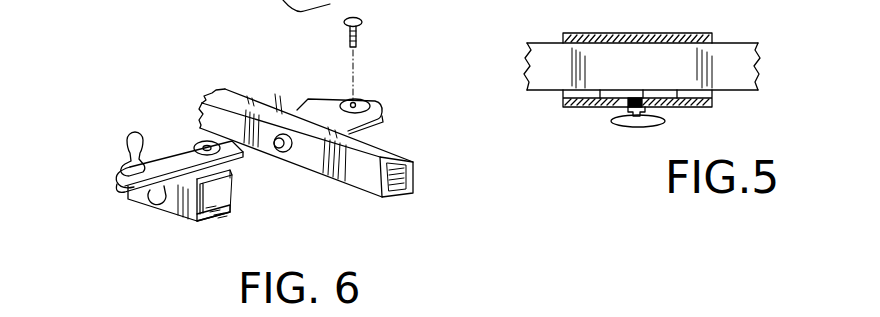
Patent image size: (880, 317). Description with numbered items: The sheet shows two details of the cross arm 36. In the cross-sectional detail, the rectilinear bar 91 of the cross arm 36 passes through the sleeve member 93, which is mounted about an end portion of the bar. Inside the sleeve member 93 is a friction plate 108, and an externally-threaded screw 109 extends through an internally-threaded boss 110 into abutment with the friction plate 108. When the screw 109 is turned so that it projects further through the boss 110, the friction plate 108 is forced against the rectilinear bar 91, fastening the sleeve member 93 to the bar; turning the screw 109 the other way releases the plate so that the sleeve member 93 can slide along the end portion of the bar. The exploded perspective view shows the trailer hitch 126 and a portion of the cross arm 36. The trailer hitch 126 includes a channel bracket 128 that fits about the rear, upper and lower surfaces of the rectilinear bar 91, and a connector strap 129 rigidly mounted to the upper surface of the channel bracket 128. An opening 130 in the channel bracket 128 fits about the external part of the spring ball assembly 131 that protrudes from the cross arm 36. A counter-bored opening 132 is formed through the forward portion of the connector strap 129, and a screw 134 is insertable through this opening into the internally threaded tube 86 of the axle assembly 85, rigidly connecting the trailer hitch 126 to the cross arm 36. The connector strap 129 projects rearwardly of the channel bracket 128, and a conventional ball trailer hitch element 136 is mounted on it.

In FIG. 6, the cross arm 36 is at (284, 106).
In FIG. 5, the cross arm 36 is at (716, 35).
In FIG. 6, the axle assembly 85 is at (361, 104).
In FIG. 6, the tube 86 is at (383, 113).
In FIG. 6, the rectilinear bar 91 is at (393, 152).
In FIG. 5, the rectilinear bar 91 is at (547, 43).
In FIG. 5, the sleeve member 93 is at (712, 106).
In FIG. 5, the friction plate 108 is at (643, 90).
In FIG. 5, the screw 109 is at (613, 117).
In FIG. 5, the boss 110 is at (662, 115).
In FIG. 6, the trailer hitch 126 is at (143, 208).
In FIG. 6, the channel bracket 128 is at (200, 224).
In FIG. 6, the connector strap 129 is at (183, 152).
In FIG. 6, the opening 130 is at (186, 221).
In FIG. 6, the spring ball assembly 131 is at (286, 153).
In FIG. 6, the counter-bored opening 132 is at (207, 146).
In FIG. 6, the screw 134 is at (358, 42).
In FIG. 6, the ball trailer hitch element 136 is at (128, 152).